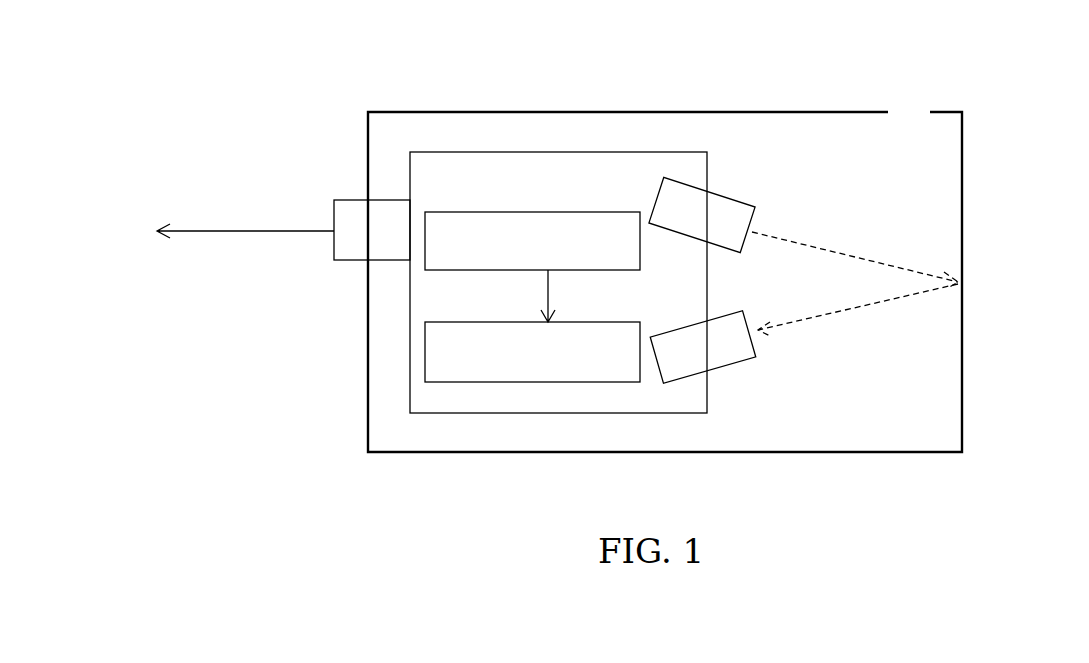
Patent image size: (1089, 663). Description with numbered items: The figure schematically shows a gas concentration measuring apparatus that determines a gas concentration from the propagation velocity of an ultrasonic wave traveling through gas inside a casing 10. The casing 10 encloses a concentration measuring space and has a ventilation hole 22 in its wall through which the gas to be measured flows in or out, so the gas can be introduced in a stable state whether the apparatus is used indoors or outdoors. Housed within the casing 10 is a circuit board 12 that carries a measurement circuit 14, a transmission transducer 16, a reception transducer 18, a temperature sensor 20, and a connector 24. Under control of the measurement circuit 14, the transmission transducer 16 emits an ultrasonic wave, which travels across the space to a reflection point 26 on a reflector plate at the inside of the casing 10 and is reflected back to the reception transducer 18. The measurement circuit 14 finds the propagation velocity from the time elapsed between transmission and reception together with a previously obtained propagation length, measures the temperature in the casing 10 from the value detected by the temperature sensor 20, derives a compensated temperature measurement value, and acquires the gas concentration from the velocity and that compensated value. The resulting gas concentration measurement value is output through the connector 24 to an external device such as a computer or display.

The casing 10 is at (653, 112).
The circuit board 12 is at (483, 152).
The measurement circuit 14 is at (492, 322).
The transmission transducer 16 is at (803, 232).
The reception transducer 18 is at (804, 333).
The temperature sensor 20 is at (492, 212).
The ventilation hole 22 is at (910, 113).
The connector 24 is at (347, 200).
The reflection point 26 is at (962, 283).